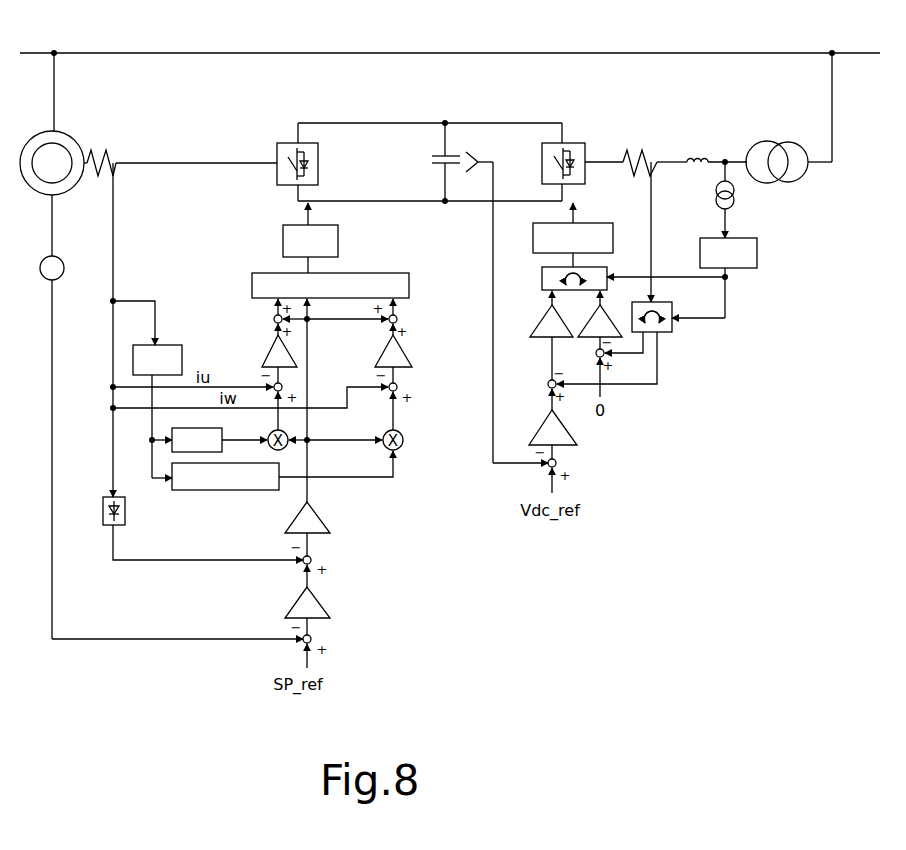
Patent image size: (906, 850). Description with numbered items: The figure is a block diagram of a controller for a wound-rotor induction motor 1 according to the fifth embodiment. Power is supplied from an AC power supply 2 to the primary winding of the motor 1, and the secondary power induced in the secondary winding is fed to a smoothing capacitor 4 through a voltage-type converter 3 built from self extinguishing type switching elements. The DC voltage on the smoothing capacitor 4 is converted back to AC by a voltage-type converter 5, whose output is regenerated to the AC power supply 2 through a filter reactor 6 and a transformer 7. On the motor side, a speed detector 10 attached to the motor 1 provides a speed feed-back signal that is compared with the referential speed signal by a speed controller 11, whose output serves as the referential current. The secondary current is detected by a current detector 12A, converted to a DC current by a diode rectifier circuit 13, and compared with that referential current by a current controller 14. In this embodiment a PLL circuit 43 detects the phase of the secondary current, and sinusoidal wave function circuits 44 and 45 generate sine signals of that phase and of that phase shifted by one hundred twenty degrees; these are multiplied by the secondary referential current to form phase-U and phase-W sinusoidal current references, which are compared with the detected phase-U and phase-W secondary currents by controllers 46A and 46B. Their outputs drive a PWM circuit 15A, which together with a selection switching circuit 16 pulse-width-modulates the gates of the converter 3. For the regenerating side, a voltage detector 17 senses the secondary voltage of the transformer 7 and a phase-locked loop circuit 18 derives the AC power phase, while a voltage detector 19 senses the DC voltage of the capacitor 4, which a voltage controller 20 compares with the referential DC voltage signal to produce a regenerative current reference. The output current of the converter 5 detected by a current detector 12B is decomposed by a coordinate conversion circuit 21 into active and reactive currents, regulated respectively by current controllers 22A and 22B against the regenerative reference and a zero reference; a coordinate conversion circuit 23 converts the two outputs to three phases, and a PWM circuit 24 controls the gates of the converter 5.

The wound-rotor induction motor 1 is at (34, 136).
The AC power supply 2 is at (442, 52).
The voltage-type converter 3 is at (280, 140).
The smoothing capacitor 4 is at (432, 167).
The voltage-type converter 5 is at (587, 139).
The filter reactor 6 is at (697, 152).
The transformer 7 is at (773, 133).
The speed detector 10 is at (58, 256).
The speed controller 11 is at (322, 602).
The current detector 12A is at (100, 148).
The current detector 12B is at (640, 152).
The diode rectifier circuit 13 is at (104, 521).
The current controller 14 is at (322, 512).
The PWM circuit 15A is at (340, 272).
The selection switching circuit 16 is at (339, 248).
The voltage detector 17 is at (737, 203).
The phase-locked loop (PLL) circuit 18 is at (752, 270).
The voltage detector 19 is at (476, 158).
The voltage controller 20 is at (570, 450).
The coordinate conversion circuit 21 is at (672, 333).
The current controller 22A is at (538, 325).
The current controller 22B is at (592, 330).
The coordinate conversion circuit 23 is at (541, 278).
The PWM circuit 24 is at (580, 222).
The PLL circuit 43 is at (176, 343).
The sinusoidal wave function circuit 44 is at (171, 453).
The sinusoidal wave function circuit 45 is at (215, 492).
The controller 46A is at (265, 348).
The controller 46B is at (410, 347).